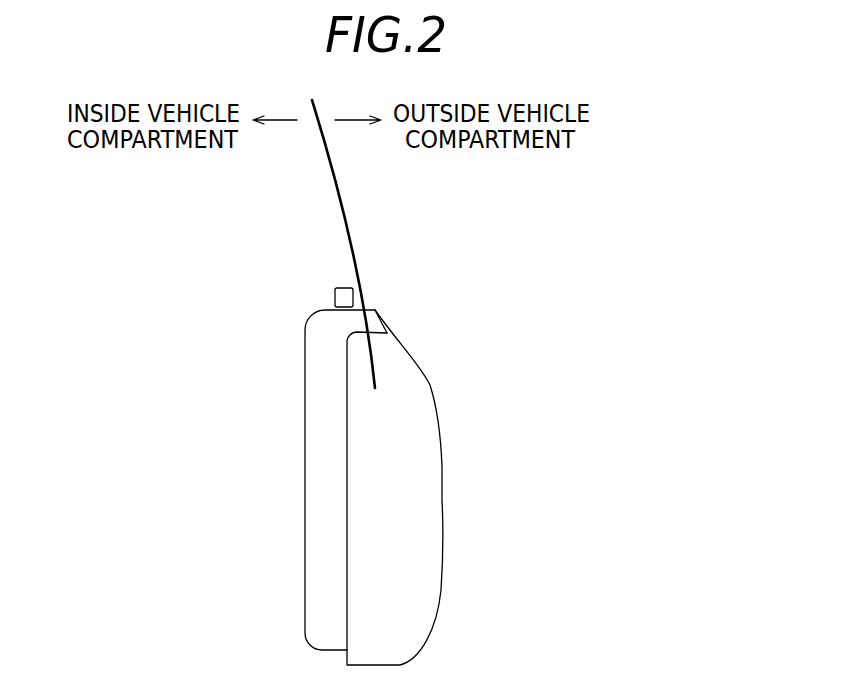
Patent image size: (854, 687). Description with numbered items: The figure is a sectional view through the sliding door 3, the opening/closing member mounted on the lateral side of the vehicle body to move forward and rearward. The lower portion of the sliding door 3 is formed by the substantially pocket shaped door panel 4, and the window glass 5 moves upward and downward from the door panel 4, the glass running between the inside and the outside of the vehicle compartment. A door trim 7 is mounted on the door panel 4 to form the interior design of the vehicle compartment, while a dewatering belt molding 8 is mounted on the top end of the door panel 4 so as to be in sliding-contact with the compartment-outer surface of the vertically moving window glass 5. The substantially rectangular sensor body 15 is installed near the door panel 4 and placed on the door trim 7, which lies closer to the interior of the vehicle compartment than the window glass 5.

The sliding door 3 is at (431, 277).
The door panel 4 is at (445, 491).
The window glass 5 is at (358, 232).
The door trim 7 is at (304, 503).
The dewatering belt molding 8 is at (388, 317).
The sensor body 15 is at (335, 297).